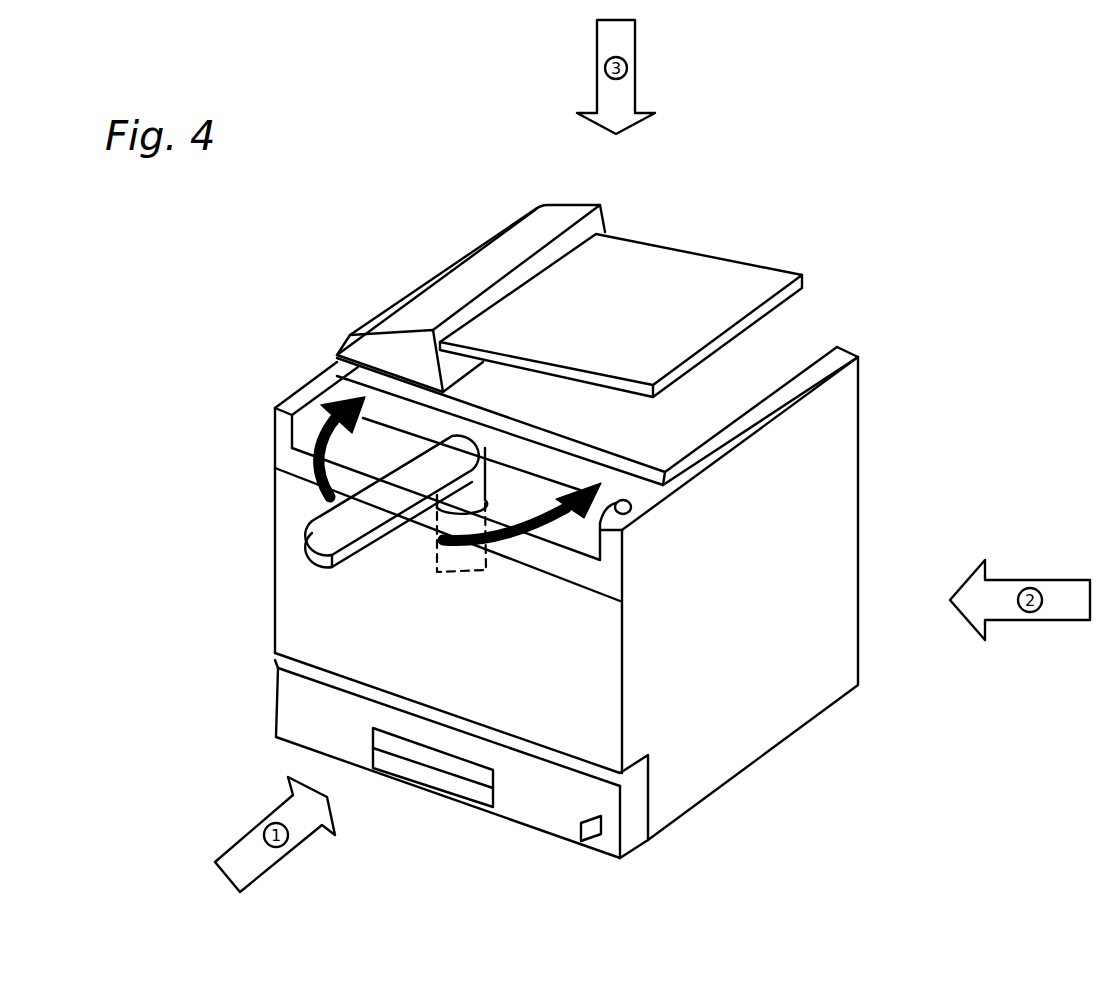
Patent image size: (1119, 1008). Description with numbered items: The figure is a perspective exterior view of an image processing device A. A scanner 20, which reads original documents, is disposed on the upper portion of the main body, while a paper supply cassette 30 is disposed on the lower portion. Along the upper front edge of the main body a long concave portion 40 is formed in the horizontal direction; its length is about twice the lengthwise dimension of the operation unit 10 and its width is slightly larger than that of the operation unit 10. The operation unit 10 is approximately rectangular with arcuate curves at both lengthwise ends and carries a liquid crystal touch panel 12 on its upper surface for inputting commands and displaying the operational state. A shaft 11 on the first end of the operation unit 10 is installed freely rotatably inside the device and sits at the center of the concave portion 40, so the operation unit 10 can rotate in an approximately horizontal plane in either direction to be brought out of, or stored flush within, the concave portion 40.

The image processing device A is at (821, 236).
The operation unit 10 is at (300, 546).
The shaft 11 is at (462, 578).
The liquid crystal touch panel 12 is at (378, 494).
The scanner 20 is at (660, 292).
The paper supply cassette 30 is at (602, 815).
The concave portion 40 is at (621, 508).